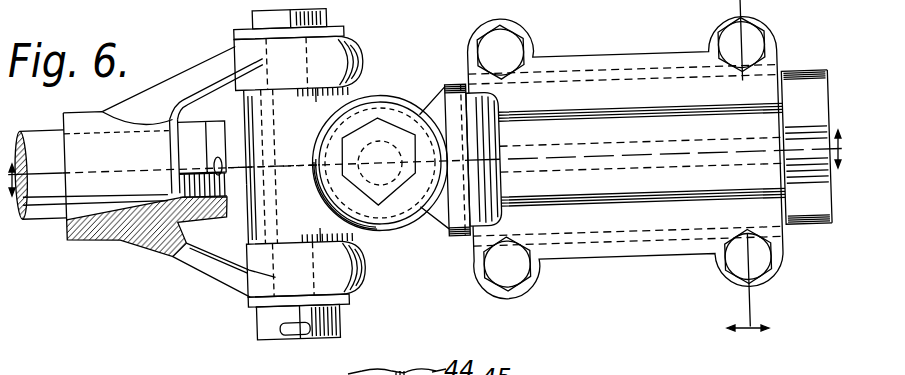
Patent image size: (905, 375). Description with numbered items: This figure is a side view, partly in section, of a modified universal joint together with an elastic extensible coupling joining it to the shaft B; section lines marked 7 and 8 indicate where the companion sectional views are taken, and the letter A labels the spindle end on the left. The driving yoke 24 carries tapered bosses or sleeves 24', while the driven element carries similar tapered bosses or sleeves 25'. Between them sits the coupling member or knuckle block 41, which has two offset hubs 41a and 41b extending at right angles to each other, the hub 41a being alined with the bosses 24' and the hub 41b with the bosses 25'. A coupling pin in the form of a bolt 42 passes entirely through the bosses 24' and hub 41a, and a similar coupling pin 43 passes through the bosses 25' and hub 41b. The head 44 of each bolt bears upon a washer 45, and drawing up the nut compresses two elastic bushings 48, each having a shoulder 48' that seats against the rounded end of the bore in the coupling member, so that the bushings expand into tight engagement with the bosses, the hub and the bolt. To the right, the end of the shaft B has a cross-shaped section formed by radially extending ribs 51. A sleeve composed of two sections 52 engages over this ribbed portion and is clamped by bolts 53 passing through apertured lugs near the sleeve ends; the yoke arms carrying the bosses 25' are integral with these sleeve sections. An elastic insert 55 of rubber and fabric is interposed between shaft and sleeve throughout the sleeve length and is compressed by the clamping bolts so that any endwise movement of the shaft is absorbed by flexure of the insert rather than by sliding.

The driving yoke 24 is at (182, 84).
The tapered bosses or sleeves 24' is at (289, 172).
The tapered bosses or sleeves 25' is at (379, 143).
The coupling member or knuckle block 41 is at (274, 117).
The hub 41a is at (256, 224).
The hub 41b is at (367, 238).
The bolt 42 is at (284, 340).
The coupling pin 43 is at (388, 137).
The head 44 is at (412, 136).
The washer 45 is at (448, 232).
The elastic bushings 48 is at (362, 165).
The shoulder 48' is at (302, 167).
The radially extending arms or ribs 51 is at (789, 68).
The sleeve sections 52 is at (620, 60).
The bolts 53 is at (509, 43).
The elastic insert 55 is at (645, 253).
The spindle A is at (26, 222).
The shaft B is at (819, 86).
The section line 7 is at (429, 162).
The section line 8 is at (743, 182).